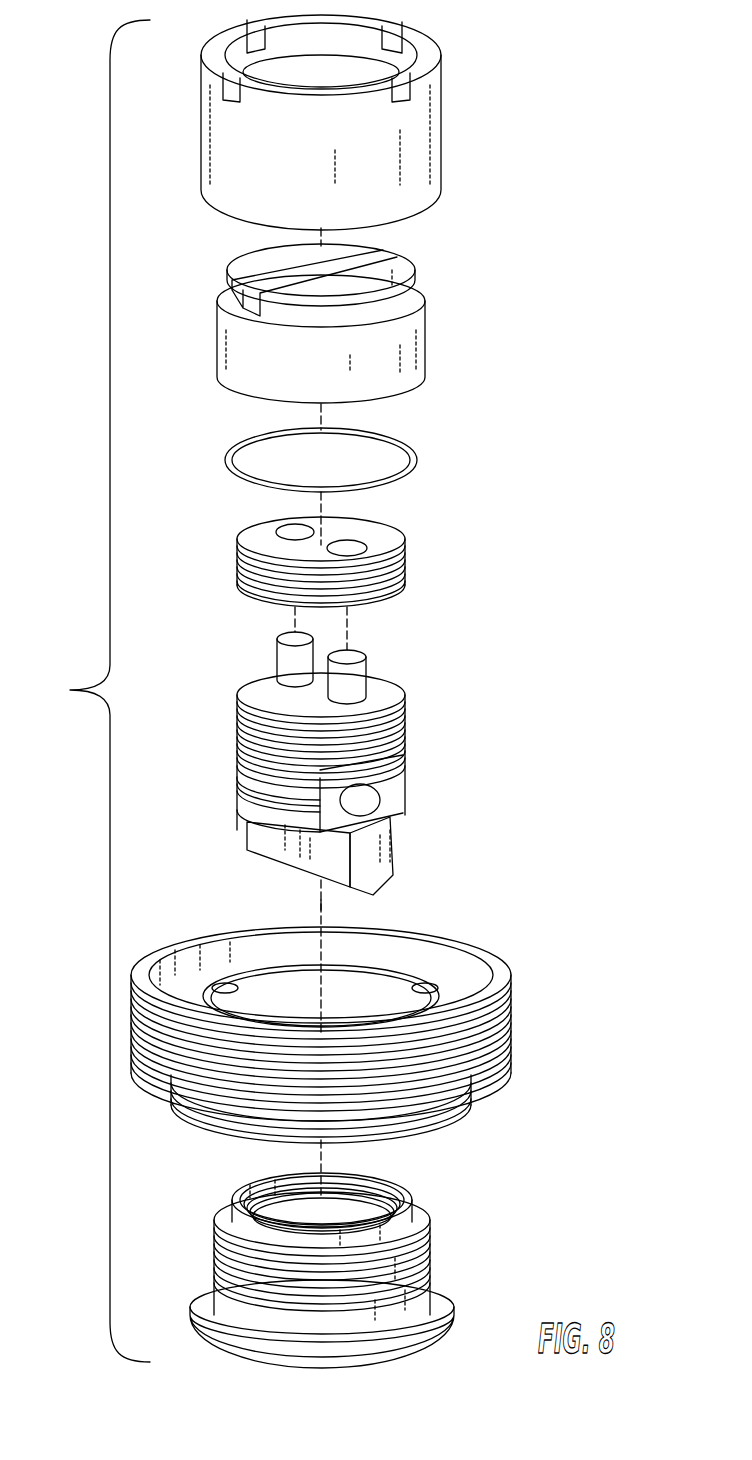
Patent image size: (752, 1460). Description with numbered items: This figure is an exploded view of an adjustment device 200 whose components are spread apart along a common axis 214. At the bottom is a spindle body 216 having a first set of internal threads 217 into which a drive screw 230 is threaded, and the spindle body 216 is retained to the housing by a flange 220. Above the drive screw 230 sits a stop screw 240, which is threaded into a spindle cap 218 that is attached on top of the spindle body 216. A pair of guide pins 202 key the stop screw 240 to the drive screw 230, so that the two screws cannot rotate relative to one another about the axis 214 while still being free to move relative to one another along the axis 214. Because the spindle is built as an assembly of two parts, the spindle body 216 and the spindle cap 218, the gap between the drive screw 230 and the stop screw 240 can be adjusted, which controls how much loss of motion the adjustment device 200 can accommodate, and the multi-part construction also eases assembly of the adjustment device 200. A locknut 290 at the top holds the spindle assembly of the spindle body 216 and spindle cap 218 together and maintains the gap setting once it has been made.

The adjustment device 200 is at (88, 691).
The locknut 290 is at (466, 121).
The spindle cap 218 is at (446, 331).
The stop screw 240 is at (429, 542).
The guide pins 202 is at (285, 652).
The drive screw 230 is at (433, 724).
The axis 214 is at (322, 906).
The flange 220 is at (543, 966).
The first set of internal threads 217 is at (371, 1205).
The spindle body 216 is at (388, 1259).